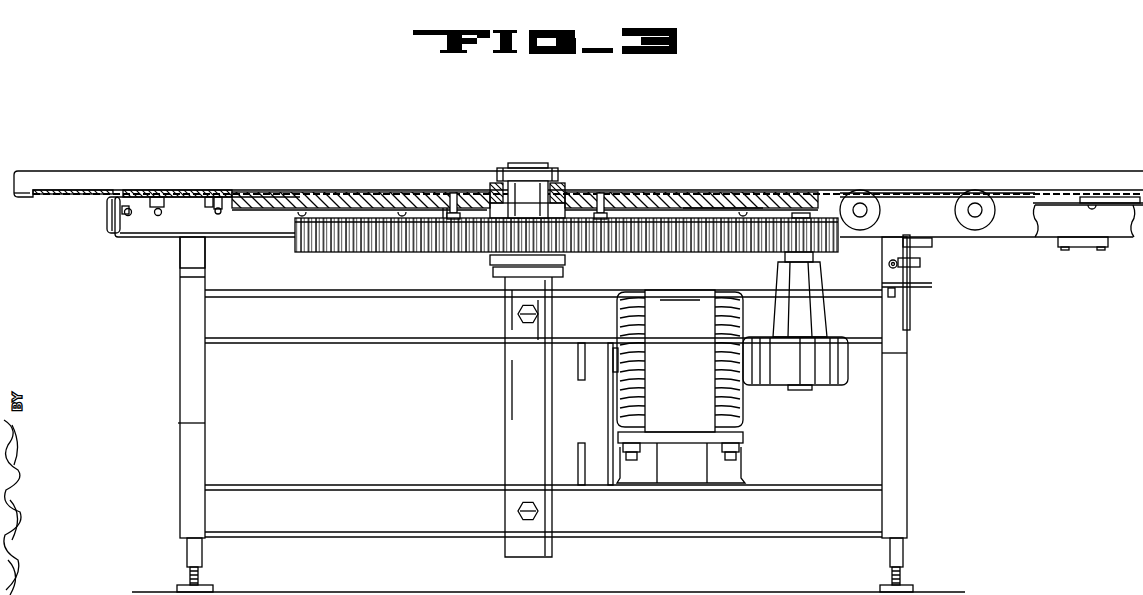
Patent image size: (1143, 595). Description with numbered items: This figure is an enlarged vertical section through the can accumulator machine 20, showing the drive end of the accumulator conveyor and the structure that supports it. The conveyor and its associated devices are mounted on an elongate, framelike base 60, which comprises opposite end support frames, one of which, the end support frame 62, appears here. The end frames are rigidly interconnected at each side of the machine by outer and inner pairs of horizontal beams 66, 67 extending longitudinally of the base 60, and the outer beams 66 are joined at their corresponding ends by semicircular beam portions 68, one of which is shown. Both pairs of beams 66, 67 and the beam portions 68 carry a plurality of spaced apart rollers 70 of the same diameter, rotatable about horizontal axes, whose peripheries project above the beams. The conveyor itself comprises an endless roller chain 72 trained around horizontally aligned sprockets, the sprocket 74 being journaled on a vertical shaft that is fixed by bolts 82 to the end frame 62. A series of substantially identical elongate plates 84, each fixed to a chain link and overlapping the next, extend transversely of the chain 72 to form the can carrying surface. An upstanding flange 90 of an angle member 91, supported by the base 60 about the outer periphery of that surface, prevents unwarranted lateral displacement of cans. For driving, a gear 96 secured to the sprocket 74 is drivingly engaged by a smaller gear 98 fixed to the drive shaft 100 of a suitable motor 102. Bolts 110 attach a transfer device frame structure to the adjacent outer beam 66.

The apparatus 20 is at (966, 154).
The base 60 is at (180, 352).
The end support frame 62 is at (360, 485).
The outer horizontal beams 66 is at (1047, 233).
The inner horizontal beams 67 is at (1008, 233).
The semicircular beam portions 68 is at (143, 238).
The rollers 70 is at (108, 214).
The endless roller chain 72 is at (220, 207).
The sprocket 74 is at (373, 198).
The bolts 82 is at (518, 314).
The elongate plates 84 is at (143, 192).
The upstanding flange 90 is at (16, 172).
The angle member 91 is at (16, 195).
The gear 96 is at (355, 248).
The smaller gear 98 is at (840, 248).
The drive shaft 100 is at (801, 214).
The motor 102 is at (698, 357).
The bolts 110 is at (1103, 251).